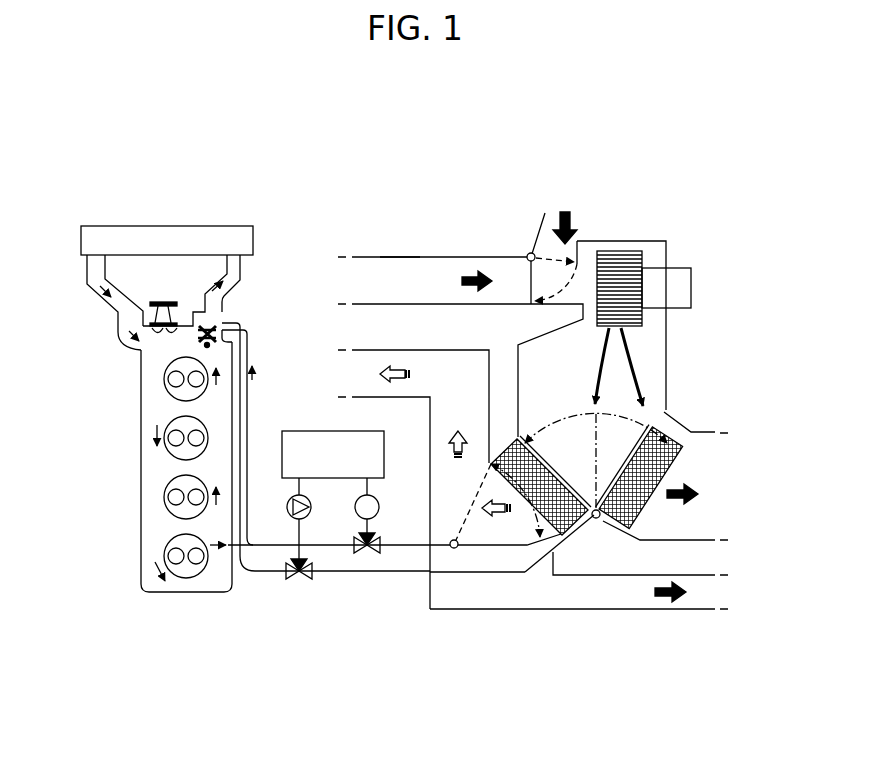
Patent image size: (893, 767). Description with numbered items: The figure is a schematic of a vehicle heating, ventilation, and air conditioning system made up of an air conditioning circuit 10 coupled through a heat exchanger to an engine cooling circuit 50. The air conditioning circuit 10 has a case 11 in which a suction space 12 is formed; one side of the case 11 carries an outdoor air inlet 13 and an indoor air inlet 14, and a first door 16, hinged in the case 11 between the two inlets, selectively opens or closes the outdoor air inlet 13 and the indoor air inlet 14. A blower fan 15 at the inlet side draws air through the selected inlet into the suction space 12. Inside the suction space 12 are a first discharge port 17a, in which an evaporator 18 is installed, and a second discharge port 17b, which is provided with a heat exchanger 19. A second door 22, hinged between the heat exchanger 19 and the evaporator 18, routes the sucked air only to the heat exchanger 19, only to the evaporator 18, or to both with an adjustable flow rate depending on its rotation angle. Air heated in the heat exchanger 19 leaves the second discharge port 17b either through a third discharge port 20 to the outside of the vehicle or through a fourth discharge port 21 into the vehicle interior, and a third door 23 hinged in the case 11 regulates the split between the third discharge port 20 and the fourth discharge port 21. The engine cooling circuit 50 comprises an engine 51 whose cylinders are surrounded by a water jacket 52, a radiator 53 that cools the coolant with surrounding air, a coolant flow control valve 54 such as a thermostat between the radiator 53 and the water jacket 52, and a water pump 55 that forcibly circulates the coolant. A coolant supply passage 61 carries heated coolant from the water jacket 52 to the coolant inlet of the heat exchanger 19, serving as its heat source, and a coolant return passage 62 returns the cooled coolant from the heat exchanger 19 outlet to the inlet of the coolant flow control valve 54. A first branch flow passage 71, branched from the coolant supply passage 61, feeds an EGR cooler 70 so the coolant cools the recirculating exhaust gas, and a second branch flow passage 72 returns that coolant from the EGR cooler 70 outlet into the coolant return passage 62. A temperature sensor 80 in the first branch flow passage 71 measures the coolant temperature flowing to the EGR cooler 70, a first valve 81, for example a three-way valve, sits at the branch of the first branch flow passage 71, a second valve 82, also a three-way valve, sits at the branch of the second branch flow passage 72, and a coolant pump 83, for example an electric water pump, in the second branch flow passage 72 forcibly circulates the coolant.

The air conditioning circuit 10 is at (685, 226).
The case 11 is at (462, 257).
The suction space 12 is at (539, 370).
The outdoor air inlet 13 is at (401, 257).
The indoor air inlet 14 is at (579, 240).
The blower fan 15 is at (692, 290).
The first door 16 is at (529, 274).
The first discharge port 17a is at (667, 412).
The second discharge port 17b is at (515, 435).
The evaporator 18 is at (636, 522).
The heat exchanger 19 is at (572, 519).
The third discharge port 20 is at (461, 351).
The fourth discharge port 21 is at (612, 577).
The second door 22 is at (595, 437).
The third door 23 is at (493, 547).
The engine cooling circuit 50 is at (116, 191).
The engine 51 is at (141, 464).
The water jacket 52 is at (158, 497).
The radiator 53 is at (166, 226).
The coolant flow control valve 54 is at (217, 333).
The water pump 55 is at (162, 302).
The coolant supply passage 61 is at (261, 572).
The coolant return passage 62 is at (385, 572).
The EGR cooler 70 is at (290, 431).
The first branch flow passage 71 is at (368, 489).
The second branch flow passage 72 is at (298, 489).
The temperature sensor 80 is at (355, 508).
The first valve 81 is at (357, 556).
The second valve 82 is at (303, 582).
The coolant pump 83 is at (287, 508).